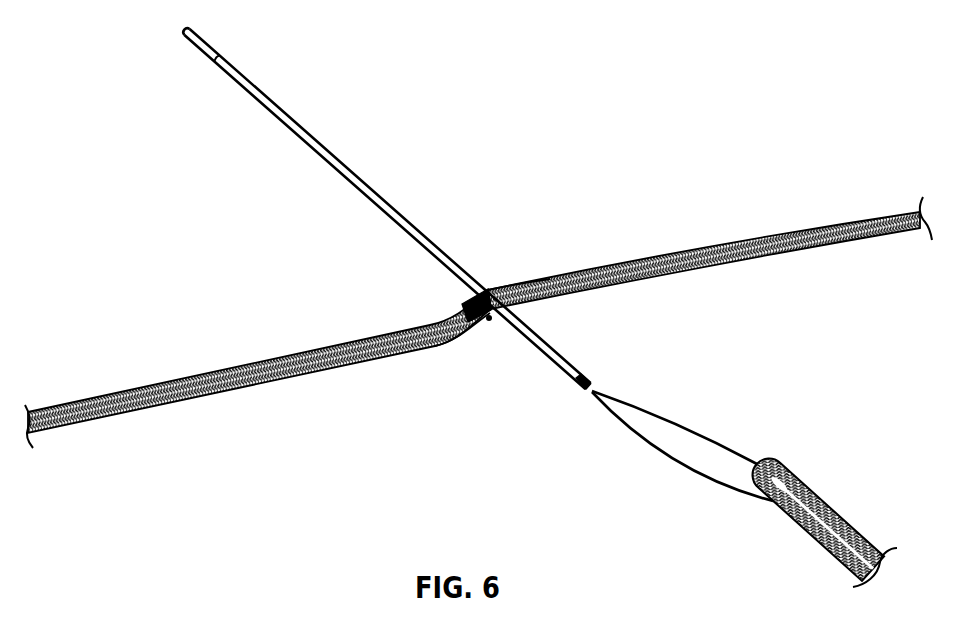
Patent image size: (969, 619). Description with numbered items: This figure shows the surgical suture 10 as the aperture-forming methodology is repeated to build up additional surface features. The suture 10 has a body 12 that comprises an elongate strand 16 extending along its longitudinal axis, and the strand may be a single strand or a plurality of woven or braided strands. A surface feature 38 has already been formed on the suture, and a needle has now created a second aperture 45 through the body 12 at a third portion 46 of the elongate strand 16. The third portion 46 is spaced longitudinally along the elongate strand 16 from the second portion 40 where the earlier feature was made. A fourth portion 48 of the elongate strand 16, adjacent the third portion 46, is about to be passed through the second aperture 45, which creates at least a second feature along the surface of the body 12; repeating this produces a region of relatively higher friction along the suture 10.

The surgical suture 10 is at (305, 320).
The body 12 is at (710, 240).
The elongate strand 16 is at (680, 246).
The surface feature 38 is at (462, 310).
The second portion 40 is at (452, 343).
The second aperture 45 is at (487, 331).
The third portion 46 is at (487, 297).
The fourth portion 48 is at (507, 290).